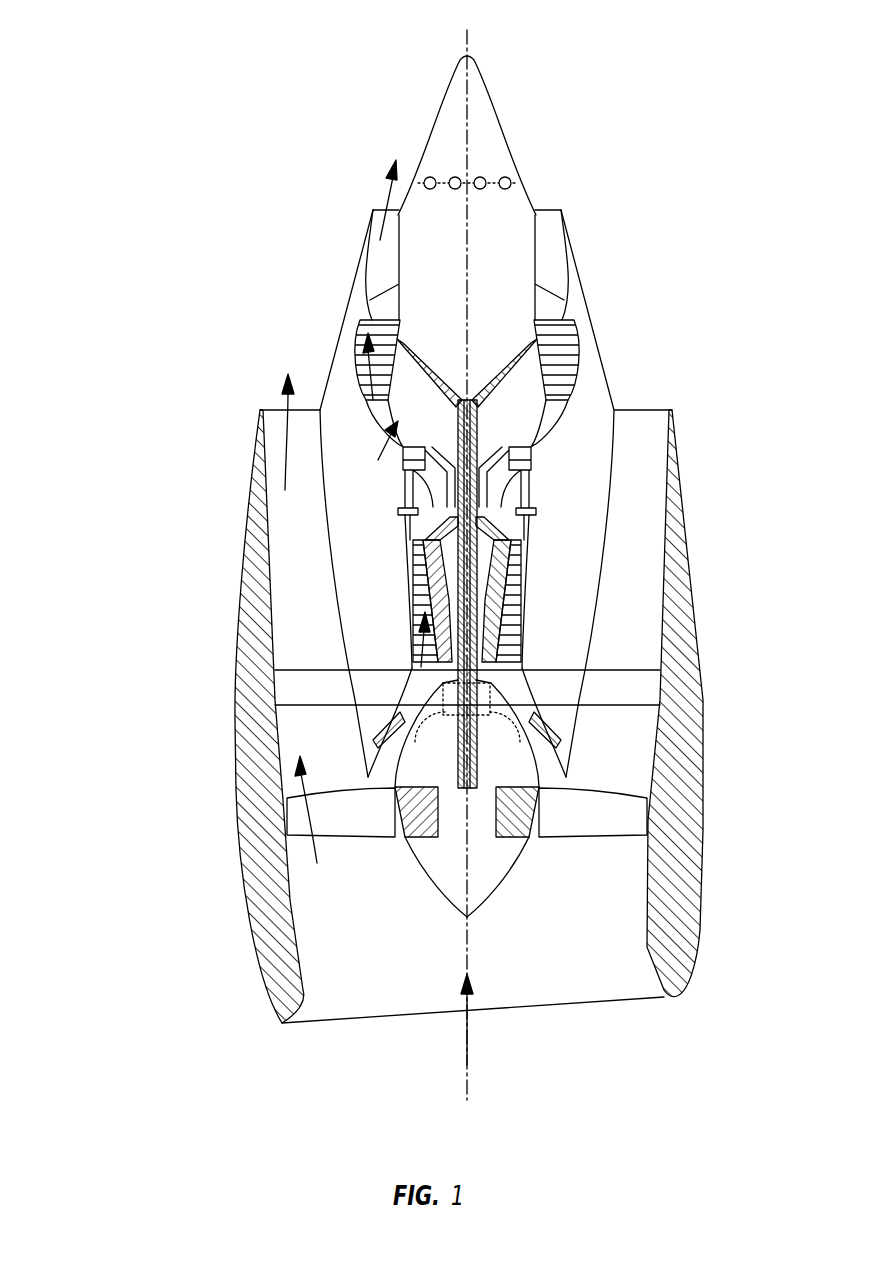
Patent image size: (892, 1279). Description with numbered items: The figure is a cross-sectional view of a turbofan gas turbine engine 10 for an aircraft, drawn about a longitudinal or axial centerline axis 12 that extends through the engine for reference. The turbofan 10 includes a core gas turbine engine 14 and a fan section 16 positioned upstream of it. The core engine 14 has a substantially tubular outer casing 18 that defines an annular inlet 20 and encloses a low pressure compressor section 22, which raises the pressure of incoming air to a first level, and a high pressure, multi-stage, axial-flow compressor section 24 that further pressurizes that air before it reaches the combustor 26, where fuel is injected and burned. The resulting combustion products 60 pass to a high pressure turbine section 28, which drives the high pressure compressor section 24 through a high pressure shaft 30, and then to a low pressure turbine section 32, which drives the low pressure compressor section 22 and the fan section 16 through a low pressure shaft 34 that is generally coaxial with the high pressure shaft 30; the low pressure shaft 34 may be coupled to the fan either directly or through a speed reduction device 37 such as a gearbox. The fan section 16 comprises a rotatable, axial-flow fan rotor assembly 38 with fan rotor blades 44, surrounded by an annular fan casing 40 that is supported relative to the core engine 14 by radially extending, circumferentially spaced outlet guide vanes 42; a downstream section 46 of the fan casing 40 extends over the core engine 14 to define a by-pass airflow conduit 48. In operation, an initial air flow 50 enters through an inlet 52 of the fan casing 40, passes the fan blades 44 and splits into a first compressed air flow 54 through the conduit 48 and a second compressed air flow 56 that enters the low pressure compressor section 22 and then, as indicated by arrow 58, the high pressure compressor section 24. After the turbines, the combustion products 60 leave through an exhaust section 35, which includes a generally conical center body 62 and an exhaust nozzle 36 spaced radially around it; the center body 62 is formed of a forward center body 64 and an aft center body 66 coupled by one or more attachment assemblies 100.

The turbofan gas turbine engine 10 is at (210, 275).
The longitudinal or axial centerline axis 12 is at (462, 272).
The core gas turbine engine 14 is at (380, 545).
The fan section 16 is at (148, 766).
The outer casing 18 is at (618, 488).
The annular inlet 20 is at (575, 768).
The low pressure compressor section 22 is at (578, 703).
The high pressure compressor section 24 is at (495, 683).
The combustor 26 is at (525, 500).
The high pressure turbine section 28 is at (560, 418).
The high pressure shaft 30 is at (440, 500).
The low pressure turbine section 32 is at (574, 337).
The low pressure shaft 34 is at (450, 722).
The exhaust section 35 is at (328, 246).
The exhaust nozzle 36 is at (374, 209).
The speed reduction device 37 is at (507, 736).
The fan rotor assembly 38 is at (445, 790).
The fan casing 40 is at (703, 882).
The outlet guide vanes 42 is at (318, 668).
The fan rotor blades 44 is at (603, 840).
The downstream section of the fan casing 46 is at (253, 468).
The by-pass airflow conduit 48 is at (308, 581).
The initial air flow 50 is at (470, 1020).
The inlet 52 is at (648, 998).
The first compressed air flow 54 is at (286, 480).
The second compressed air flow 56 is at (375, 772).
The air flow entering high pressure compressor 58 is at (420, 670).
The combustion products 60 is at (358, 425).
The center body 62 is at (390, 103).
The forward center body 64 is at (540, 210).
The aft center body 66 is at (485, 113).
The attachment assemblies 100 is at (418, 177).